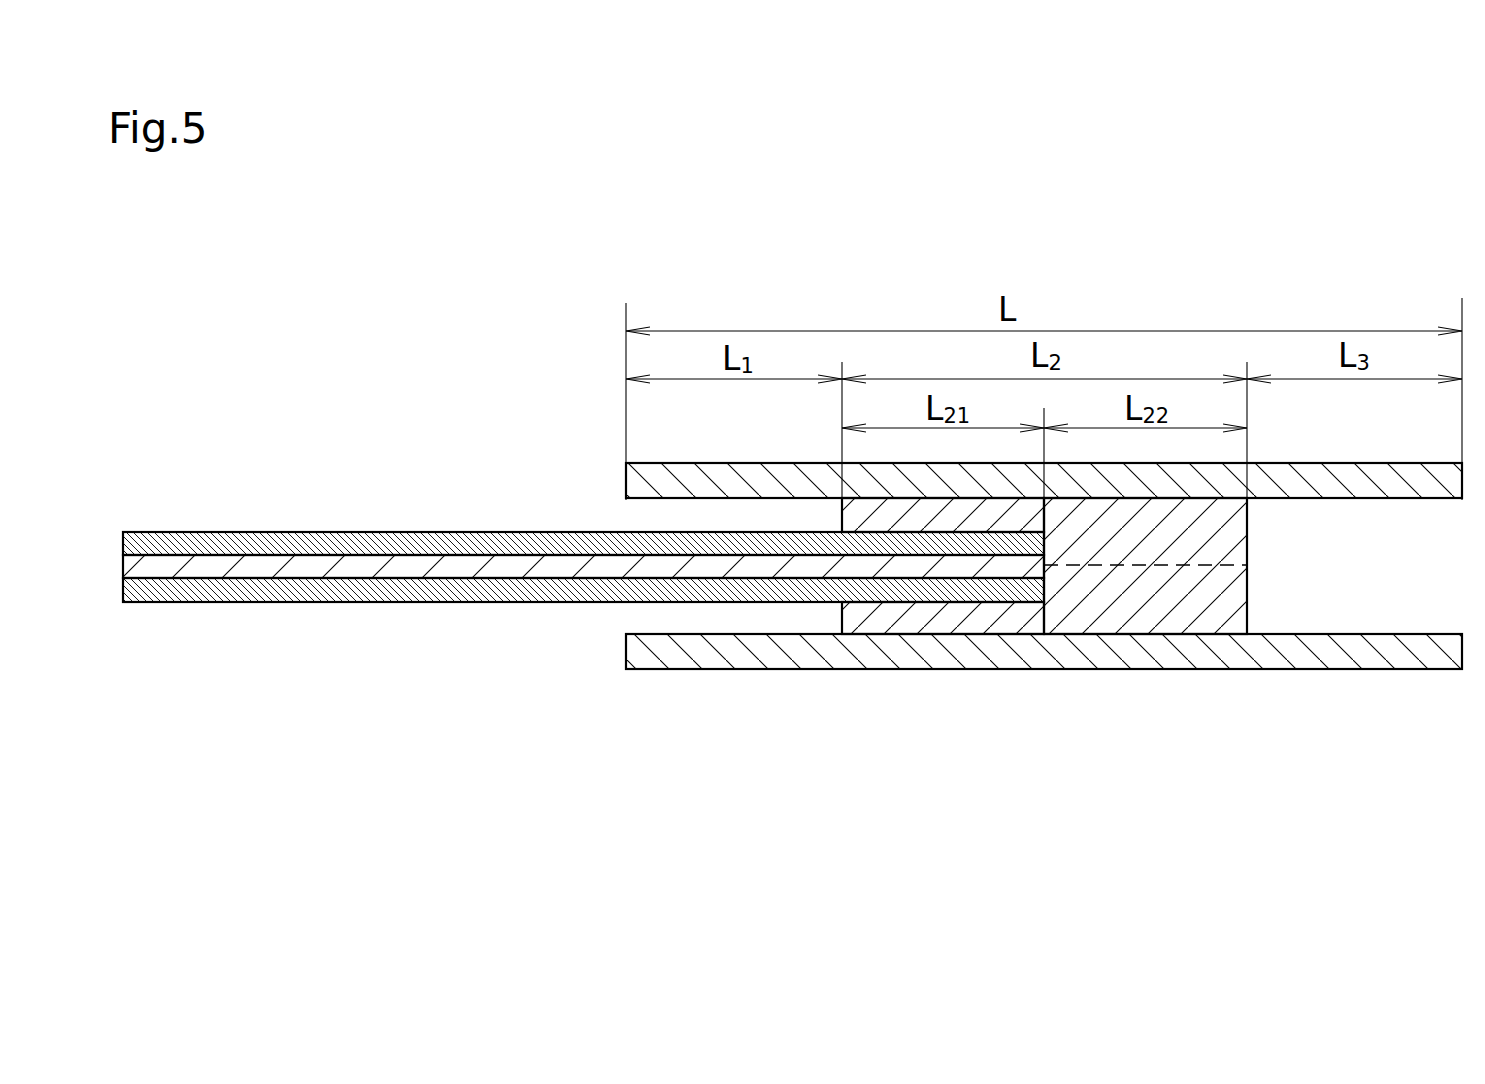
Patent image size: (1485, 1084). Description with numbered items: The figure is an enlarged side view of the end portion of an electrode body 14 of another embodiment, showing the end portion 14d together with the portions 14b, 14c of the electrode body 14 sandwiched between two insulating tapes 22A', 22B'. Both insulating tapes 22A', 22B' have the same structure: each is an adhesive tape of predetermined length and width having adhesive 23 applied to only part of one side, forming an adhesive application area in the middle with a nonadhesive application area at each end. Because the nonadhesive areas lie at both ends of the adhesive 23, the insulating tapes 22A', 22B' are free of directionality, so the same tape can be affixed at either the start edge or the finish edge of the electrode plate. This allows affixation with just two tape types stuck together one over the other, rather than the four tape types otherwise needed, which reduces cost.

The flexible substrate / flat cable 14 is at (296, 503).
The conductive layer of flexible substrate 14b is at (378, 545).
The insulating core layer of flexible substrate 14c is at (190, 568).
The end portion of flexible substrate 14d is at (1020, 600).
The insulating tape 22A' is at (981, 425).
The insulating tape 22B' is at (998, 697).
The adhesive 23 is at (905, 617).